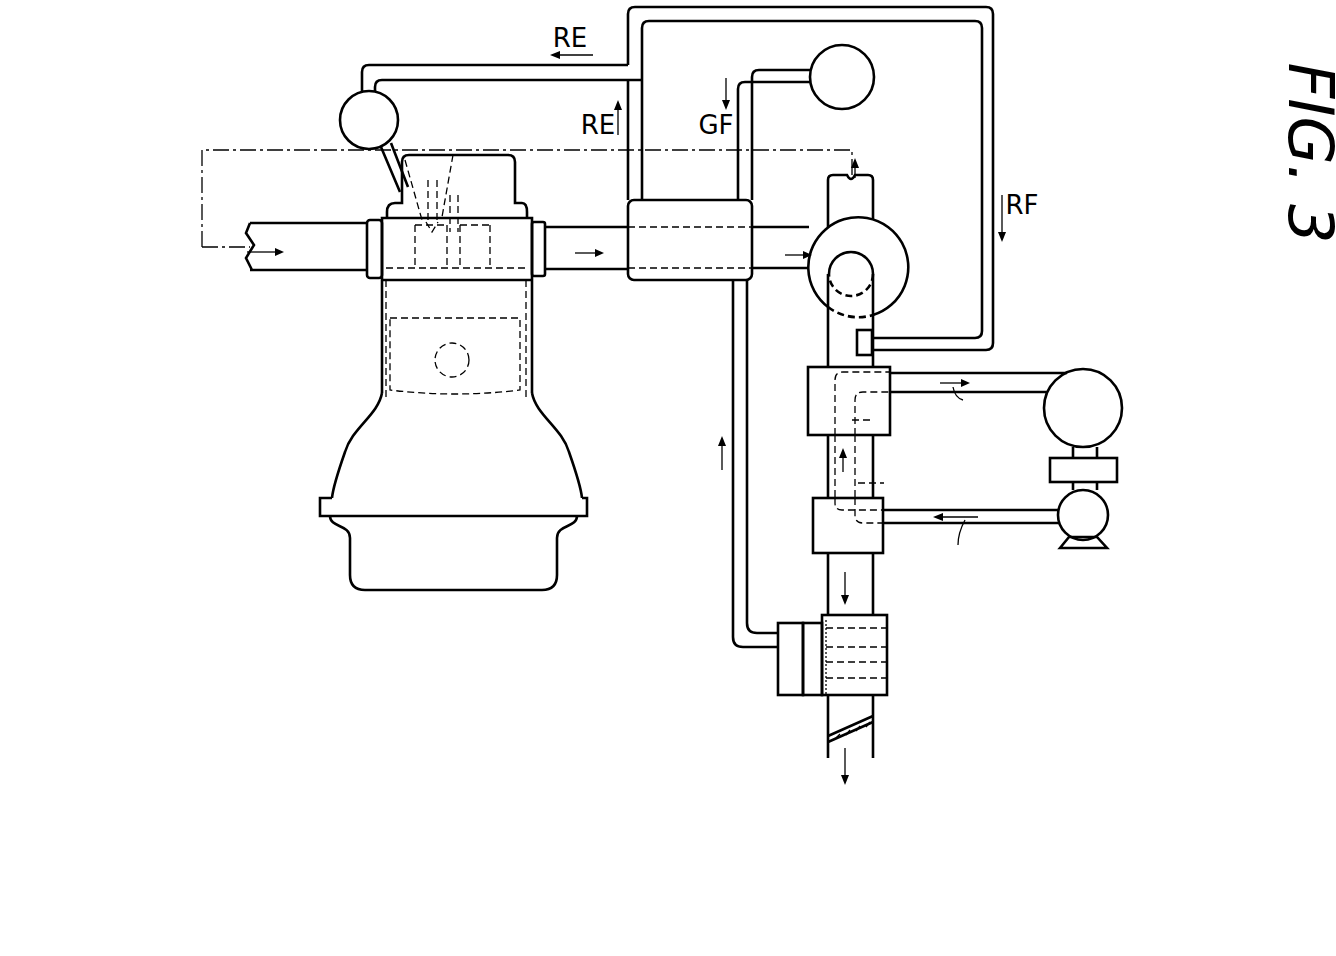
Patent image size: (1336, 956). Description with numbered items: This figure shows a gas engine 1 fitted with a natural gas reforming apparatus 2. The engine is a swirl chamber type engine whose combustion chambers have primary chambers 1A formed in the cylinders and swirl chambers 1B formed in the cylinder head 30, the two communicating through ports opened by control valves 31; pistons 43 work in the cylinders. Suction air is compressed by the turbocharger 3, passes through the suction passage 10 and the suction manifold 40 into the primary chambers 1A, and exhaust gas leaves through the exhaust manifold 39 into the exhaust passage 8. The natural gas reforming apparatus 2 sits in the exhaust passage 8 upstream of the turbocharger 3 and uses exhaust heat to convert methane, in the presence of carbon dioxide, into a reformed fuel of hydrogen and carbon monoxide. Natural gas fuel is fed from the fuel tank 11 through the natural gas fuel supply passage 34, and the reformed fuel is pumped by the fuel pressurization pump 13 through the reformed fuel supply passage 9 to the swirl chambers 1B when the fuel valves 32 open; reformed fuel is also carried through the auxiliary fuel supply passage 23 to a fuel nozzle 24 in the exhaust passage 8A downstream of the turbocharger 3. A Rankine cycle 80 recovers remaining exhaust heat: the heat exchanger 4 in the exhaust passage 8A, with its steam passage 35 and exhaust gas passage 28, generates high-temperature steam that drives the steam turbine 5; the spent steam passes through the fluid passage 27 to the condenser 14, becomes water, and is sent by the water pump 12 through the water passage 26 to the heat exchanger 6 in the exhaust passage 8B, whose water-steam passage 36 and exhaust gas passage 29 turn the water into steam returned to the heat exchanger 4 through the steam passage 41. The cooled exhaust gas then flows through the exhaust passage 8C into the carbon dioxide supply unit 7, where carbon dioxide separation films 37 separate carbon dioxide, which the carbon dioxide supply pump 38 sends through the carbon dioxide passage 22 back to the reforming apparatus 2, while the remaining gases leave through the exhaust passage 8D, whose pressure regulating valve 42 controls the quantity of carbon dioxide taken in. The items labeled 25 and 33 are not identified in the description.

The gas engine 1 is at (374, 304).
The primary chambers 1A is at (520, 305).
The swirl chambers 1B is at (522, 201).
The natural gas reforming apparatus 2 is at (690, 253).
The turbocharger 3 is at (883, 240).
The heat exchanger 4 is at (845, 392).
The steam turbine 5 is at (1103, 398).
The heat exchanger 6 is at (820, 522).
The CO2 supply unit 7 is at (889, 688).
The exhaust passage 8 is at (598, 228).
The exhaust passage 8A is at (833, 330).
The exhaust passage 8B is at (900, 460).
The exhaust passage 8C is at (873, 585).
The exhaust passage 8D is at (838, 705).
The reformed fuel supply passage 9 is at (472, 66).
The suction passage 10 is at (230, 148).
The fuel tank 11 is at (862, 75).
The water pump 12 is at (1100, 517).
The fuel pressurization pump 13 is at (352, 112).
The condenser 14 is at (1110, 470).
The CO2 passage 22 is at (733, 531).
The auxiliary fuel supply passage 23 is at (995, 152).
The fuel nozzle 24 is at (870, 342).
The steam pipe 25 is at (1017, 382).
The water passage 26 is at (1002, 527).
The fluid passage 27 is at (1092, 452).
The exhaust gas passage 28 is at (822, 388).
The exhaust gas passage 29 is at (822, 548).
The cylinder head 30 is at (385, 235).
The control valve 31 is at (532, 281).
The fuel valve 32 is at (448, 190).
The heat exchange passage 33 is at (655, 233).
The natural gas fuel supply passage 34 is at (748, 70).
The steam passage 35 is at (870, 420).
The water-steam passage 36 is at (832, 505).
The CO2 separation films 37 is at (888, 633).
The CO2 supply pump 38 is at (790, 677).
The exhaust manifold 39 is at (545, 246).
The suction manifold 40 is at (372, 266).
The steam passage 41 is at (870, 447).
The pressure regulating valve 42 is at (858, 728).
The pistons 43 is at (505, 360).
The Rankine cycle 80 is at (990, 364).